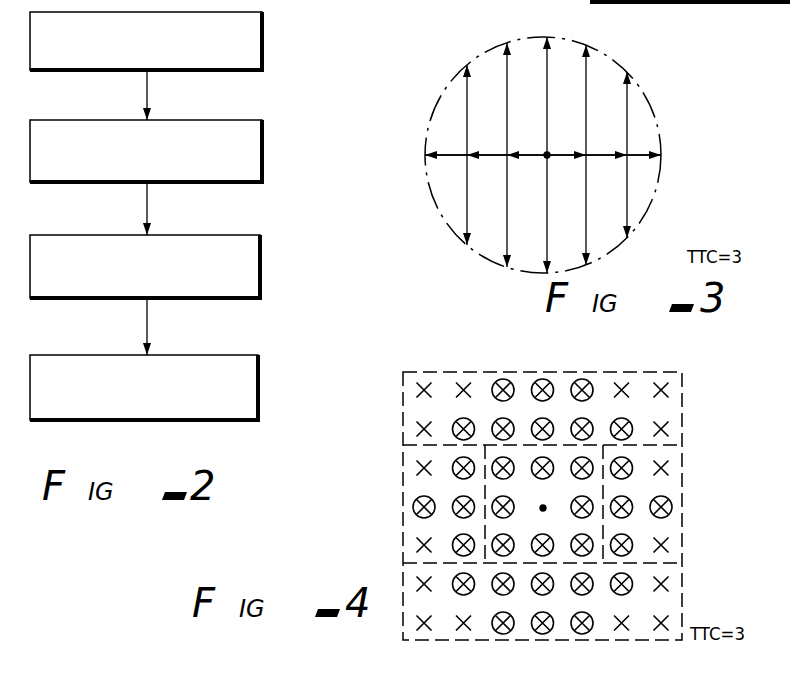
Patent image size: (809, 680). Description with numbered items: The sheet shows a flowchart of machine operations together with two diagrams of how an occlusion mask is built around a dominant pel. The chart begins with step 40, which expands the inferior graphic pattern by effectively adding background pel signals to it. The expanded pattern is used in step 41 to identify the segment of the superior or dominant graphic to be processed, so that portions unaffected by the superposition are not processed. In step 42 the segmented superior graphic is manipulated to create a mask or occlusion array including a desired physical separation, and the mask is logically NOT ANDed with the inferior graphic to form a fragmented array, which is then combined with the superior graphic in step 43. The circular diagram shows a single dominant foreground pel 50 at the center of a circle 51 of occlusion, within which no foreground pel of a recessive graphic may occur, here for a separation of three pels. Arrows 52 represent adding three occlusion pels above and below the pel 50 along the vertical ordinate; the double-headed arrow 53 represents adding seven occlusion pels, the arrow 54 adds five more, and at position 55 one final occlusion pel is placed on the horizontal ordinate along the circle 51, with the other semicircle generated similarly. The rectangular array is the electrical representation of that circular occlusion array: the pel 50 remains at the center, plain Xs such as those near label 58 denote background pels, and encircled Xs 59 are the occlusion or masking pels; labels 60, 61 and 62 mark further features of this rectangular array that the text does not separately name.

In FIG. 2, the expand inferior graphic step 40 is at (265, 52).
In FIG. 2, the segment superior graphic step 41 is at (265, 158).
In FIG. 2, the mask inferior graphic step 42 is at (262, 270).
In FIG. 2, the combine graphics step 43 is at (260, 392).
In FIG. 3, the single dominant foreground pel 50 is at (547, 155).
In FIG. 4, the single dominant foreground pel 50 is at (560, 504).
In FIG. 3, the circle of occlusion 51 is at (658, 122).
In FIG. 3, the vertical occlusion arrows 52 is at (543, 53).
In FIG. 3, the double-headed arrow 53 is at (503, 72).
In FIG. 3, the arrow 54 is at (465, 98).
In FIG. 3, the position 55 is at (433, 153).
In FIG. 4, the unmarked pixels (X) 58 is at (470, 388).
In FIG. 4, the encircled Xs 59 is at (550, 420).
In FIG. 4, the marked pixel adjacent to center 60 is at (514, 474).
In FIG. 4, the inner region boundary 61 is at (412, 485).
In FIG. 4, the outer region boundary 62 is at (417, 372).